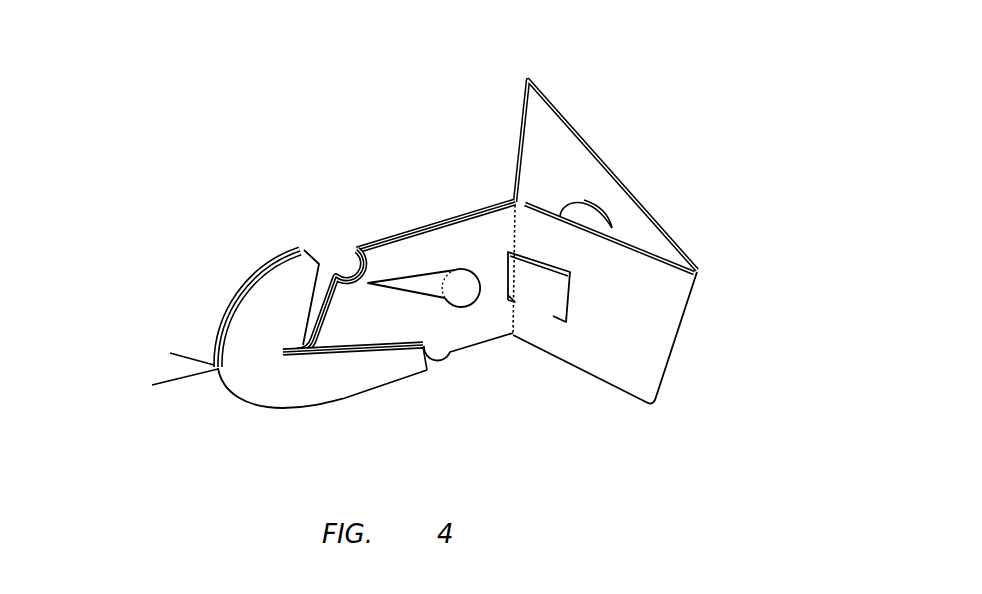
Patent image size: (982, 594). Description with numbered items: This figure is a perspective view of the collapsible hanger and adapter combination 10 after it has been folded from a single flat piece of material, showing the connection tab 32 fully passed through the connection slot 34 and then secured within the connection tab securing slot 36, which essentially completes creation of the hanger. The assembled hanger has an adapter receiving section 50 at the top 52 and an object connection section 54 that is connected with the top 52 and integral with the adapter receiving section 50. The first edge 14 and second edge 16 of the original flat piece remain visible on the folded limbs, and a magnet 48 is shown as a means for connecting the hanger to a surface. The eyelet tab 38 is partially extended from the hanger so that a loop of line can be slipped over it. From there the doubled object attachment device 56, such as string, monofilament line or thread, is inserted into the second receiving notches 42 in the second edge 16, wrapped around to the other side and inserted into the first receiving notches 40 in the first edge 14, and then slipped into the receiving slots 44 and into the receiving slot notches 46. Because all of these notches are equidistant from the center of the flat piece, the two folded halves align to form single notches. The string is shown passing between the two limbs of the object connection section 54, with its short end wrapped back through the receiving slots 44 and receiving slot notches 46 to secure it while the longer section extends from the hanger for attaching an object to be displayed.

The collapsible hanger and adapter combination 10 is at (486, 246).
The first edge 14 is at (627, 387).
The second edge 16 is at (681, 243).
The connection tab 32 is at (545, 294).
The connection slot 34 is at (508, 297).
The connection tab securing slot 36 is at (588, 298).
The eyelet tab 38 is at (468, 265).
The first receiving notches 40 is at (424, 354).
The second receiving notches 42 is at (368, 277).
The receiving slots 44 is at (290, 285).
The receiving slot notch 46 is at (288, 340).
The magnet 48 is at (577, 217).
The adapter receiving section 50 is at (556, 138).
The top 52 is at (500, 86).
The object connection section 54 is at (440, 203).
The object attachment device 56 is at (388, 312).